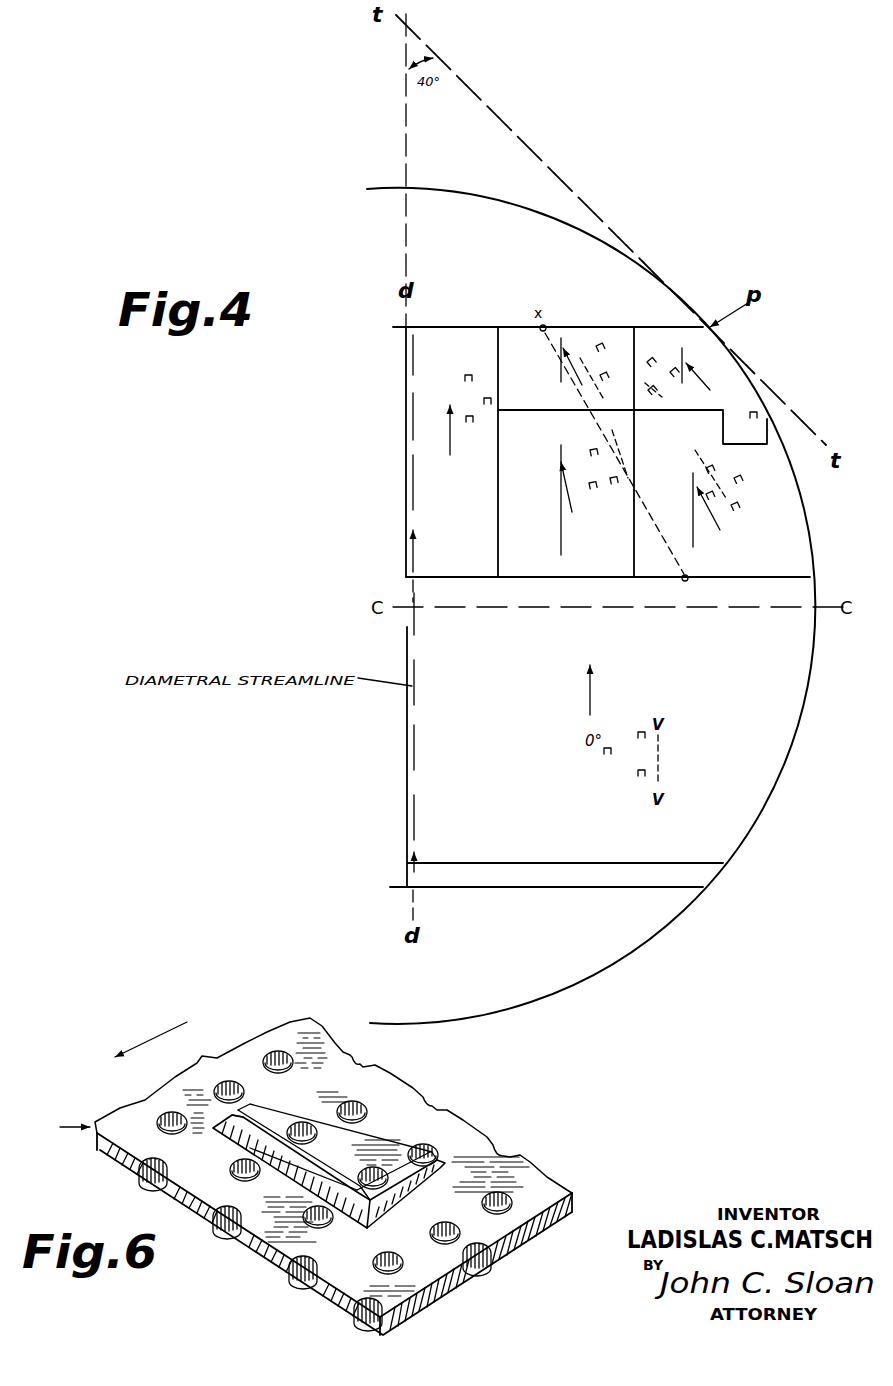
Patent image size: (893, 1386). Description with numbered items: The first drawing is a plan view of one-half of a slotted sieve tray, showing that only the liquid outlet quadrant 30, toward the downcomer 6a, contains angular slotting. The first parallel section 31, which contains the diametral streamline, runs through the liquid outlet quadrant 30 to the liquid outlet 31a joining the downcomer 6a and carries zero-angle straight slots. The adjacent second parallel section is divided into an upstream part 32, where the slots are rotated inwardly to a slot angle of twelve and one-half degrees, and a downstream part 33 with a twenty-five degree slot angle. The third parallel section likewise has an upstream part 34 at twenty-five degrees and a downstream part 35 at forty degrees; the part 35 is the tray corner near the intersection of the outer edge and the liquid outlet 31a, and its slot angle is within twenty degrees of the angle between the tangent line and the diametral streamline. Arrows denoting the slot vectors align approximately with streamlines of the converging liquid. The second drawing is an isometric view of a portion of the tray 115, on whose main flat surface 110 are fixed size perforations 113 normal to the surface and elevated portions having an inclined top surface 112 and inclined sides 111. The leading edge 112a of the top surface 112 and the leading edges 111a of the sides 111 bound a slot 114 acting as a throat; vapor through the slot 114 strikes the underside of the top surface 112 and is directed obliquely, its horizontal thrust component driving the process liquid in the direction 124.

In FIG. 4, the downcomer 6a is at (460, 300).
In FIG. 4, the liquid outlet quadrant 30 is at (745, 578).
In FIG. 4, the first parallel section 31 is at (480, 562).
In FIG. 4, the liquid outlet 31a is at (597, 337).
In FIG. 4, the upstream part of second parallel section 32 is at (618, 562).
In FIG. 4, the downstream part of second parallel section 33 is at (507, 330).
In FIG. 4, the upstream part of third parallel section 34 is at (667, 567).
In FIG. 4, the downstream part of third parallel section 35 is at (697, 342).
In FIG. 6, the main flat surface 110 is at (123, 1117).
In FIG. 6, the inclined sides 111 is at (329, 1181).
In FIG. 6, the leading edges of inclined sides 111a is at (395, 1220).
In FIG. 6, the top surface 112 is at (323, 1145).
In FIG. 6, the leading edge of top surface 112a is at (322, 1171).
In FIG. 6, the perforations 113 is at (275, 1052).
In FIG. 6, the slot 114 is at (248, 1148).
In FIG. 6, the tray 115 is at (54, 1129).
In FIG. 6, the direction of liquid flow 124 is at (132, 1043).